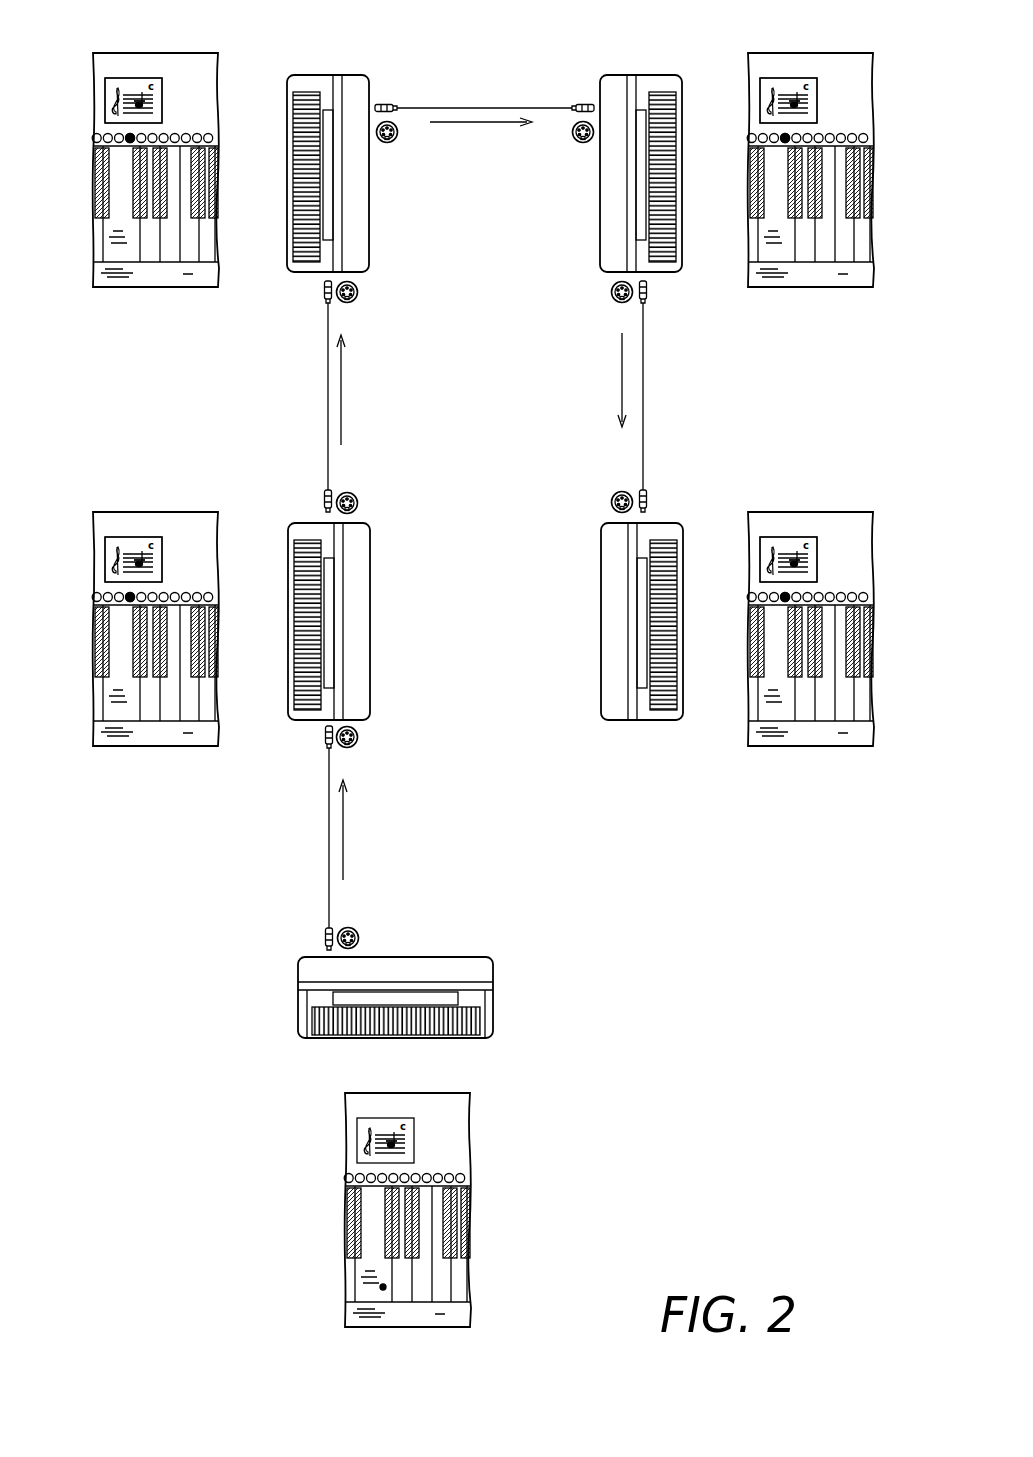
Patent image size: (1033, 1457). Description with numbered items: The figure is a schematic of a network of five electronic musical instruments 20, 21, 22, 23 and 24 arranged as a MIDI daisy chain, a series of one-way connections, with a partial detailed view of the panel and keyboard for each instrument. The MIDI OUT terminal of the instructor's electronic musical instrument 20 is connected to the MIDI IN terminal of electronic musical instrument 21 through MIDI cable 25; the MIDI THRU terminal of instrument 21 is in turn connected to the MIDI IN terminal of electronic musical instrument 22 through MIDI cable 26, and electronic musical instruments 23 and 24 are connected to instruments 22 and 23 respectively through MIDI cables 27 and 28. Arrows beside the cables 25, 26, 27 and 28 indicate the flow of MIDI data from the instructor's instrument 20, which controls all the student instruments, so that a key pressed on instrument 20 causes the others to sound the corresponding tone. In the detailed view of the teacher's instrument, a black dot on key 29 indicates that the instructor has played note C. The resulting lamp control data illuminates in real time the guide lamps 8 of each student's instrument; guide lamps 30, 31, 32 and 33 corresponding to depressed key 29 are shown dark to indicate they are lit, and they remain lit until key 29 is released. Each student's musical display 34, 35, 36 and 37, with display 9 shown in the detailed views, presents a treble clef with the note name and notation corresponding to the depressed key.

The guide lamps 8 is at (201, 133).
The note display 9 is at (138, 78).
The electronic musical instrument 20 is at (483, 957).
The electronic musical instrument 21 is at (373, 647).
The electronic musical instrument 22 is at (370, 243).
The electronic musical instrument 23 is at (600, 240).
The electronic musical instrument 24 is at (602, 680).
The MIDI cable 25 is at (329, 832).
The MIDI cable 26 is at (328, 387).
The MIDI cable 27 is at (481, 108).
The MIDI cable 28 is at (638, 407).
The key 29 is at (380, 1297).
The guide lamp 30 is at (126, 596).
The guide lamp 31 is at (126, 137).
The guide lamp 32 is at (781, 137).
The guide lamp 33 is at (781, 596).
The musical display 34 is at (104, 545).
The musical display 35 is at (104, 86).
The musical display 36 is at (759, 86).
The musical display 37 is at (759, 545).